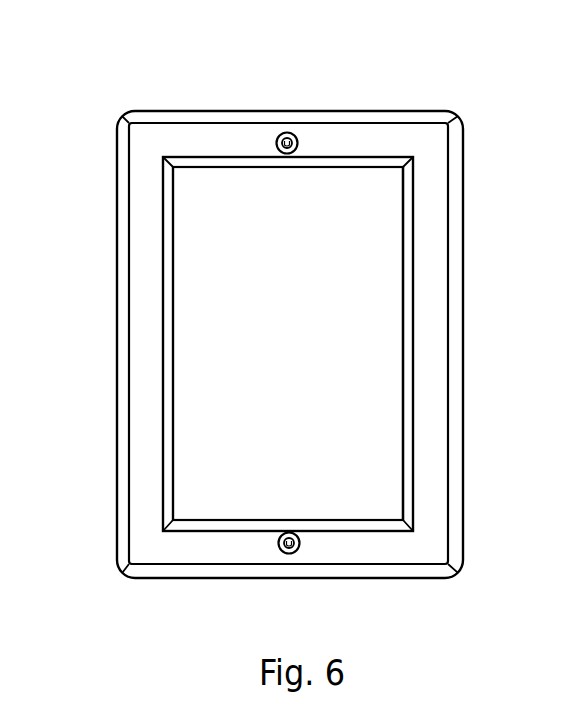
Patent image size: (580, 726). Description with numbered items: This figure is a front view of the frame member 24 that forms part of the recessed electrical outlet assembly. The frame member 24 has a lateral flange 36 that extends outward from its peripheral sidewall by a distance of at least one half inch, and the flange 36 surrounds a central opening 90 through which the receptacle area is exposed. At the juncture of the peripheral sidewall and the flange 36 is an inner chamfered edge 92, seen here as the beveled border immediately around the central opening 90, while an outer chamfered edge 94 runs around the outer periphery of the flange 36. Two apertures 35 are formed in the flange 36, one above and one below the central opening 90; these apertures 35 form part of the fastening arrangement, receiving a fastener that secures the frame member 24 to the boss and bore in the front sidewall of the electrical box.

The frame member 24 is at (158, 624).
The apertures 35 is at (287, 132).
The lateral flange 36 is at (443, 341).
The central opening 90 is at (307, 341).
The inner chamfered edge 92 is at (407, 203).
The outer chamfered edge 94 is at (452, 277).